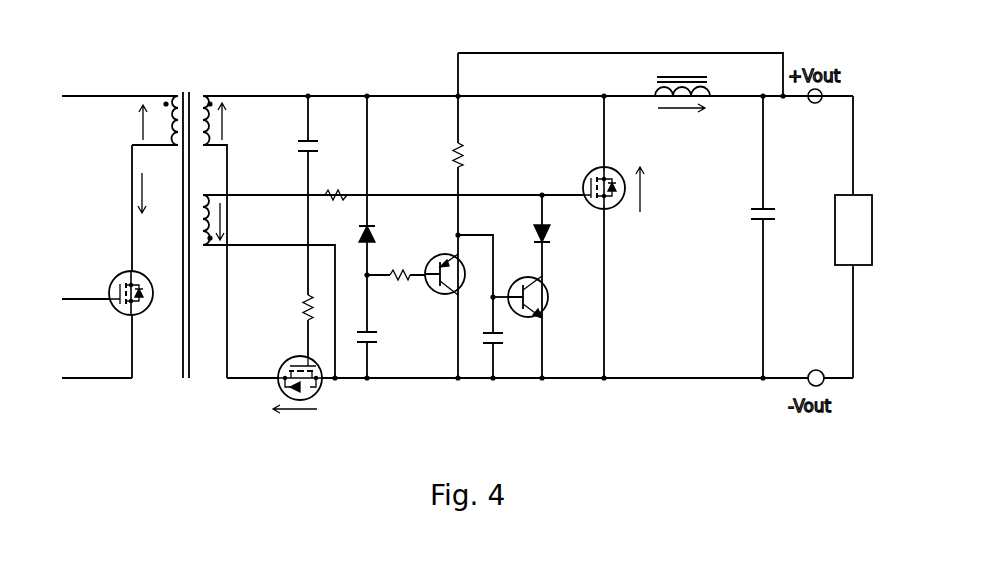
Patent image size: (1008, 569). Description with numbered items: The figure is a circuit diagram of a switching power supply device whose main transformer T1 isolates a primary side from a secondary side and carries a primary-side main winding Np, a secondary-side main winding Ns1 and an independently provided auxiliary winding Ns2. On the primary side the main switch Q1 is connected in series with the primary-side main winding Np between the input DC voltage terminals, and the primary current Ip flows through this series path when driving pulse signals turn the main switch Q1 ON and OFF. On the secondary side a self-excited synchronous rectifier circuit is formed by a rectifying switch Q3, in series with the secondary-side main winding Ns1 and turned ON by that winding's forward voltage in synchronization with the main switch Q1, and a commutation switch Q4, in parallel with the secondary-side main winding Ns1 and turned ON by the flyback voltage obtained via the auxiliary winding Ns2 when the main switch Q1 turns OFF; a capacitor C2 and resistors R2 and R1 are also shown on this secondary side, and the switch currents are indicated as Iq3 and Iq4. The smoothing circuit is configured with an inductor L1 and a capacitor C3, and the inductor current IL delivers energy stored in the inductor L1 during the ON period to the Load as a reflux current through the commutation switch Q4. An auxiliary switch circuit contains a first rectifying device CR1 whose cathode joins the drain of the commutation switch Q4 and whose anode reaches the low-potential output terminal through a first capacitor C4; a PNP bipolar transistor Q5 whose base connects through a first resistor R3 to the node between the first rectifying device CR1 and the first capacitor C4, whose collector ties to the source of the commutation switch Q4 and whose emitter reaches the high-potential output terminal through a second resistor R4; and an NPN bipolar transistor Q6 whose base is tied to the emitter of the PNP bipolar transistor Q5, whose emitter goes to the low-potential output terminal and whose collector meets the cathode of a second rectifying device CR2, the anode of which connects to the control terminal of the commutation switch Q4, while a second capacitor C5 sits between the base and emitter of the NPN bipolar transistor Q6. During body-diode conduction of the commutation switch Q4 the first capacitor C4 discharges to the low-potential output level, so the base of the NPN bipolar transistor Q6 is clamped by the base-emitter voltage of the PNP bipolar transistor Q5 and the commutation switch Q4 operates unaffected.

The main transformer T1 is at (187, 225).
The primary-side main winding Np is at (143, 120).
The secondary-side main winding Ns1 is at (230, 120).
The auxiliary winding Ns2 is at (231, 220).
The primary current Ip is at (151, 193).
The main switch Q1 is at (121, 286).
The capacitor C2 is at (319, 138).
The resistor R2 is at (335, 187).
The resistor R1 is at (297, 308).
The first rectifying device CR1 is at (386, 230).
The first capacitor C4 is at (377, 331).
The first resistor R3 is at (399, 267).
The rectifying switch Q3 is at (312, 380).
The current through Q3 Iq3 is at (295, 420).
The second resistor R4 is at (471, 155).
The PNP bipolar transistor Q5 is at (454, 274).
The NPN bipolar transistor Q6 is at (538, 296).
The second rectifying device CR2 is at (559, 239).
The second capacitor C5 is at (501, 352).
The commutation switch Q4 is at (604, 180).
The current through Q4 Iq4 is at (652, 189).
The inductor L1 is at (669, 83).
The inductor current IL is at (681, 120).
The output capacitor C3 is at (772, 205).
The load Load is at (853, 230).